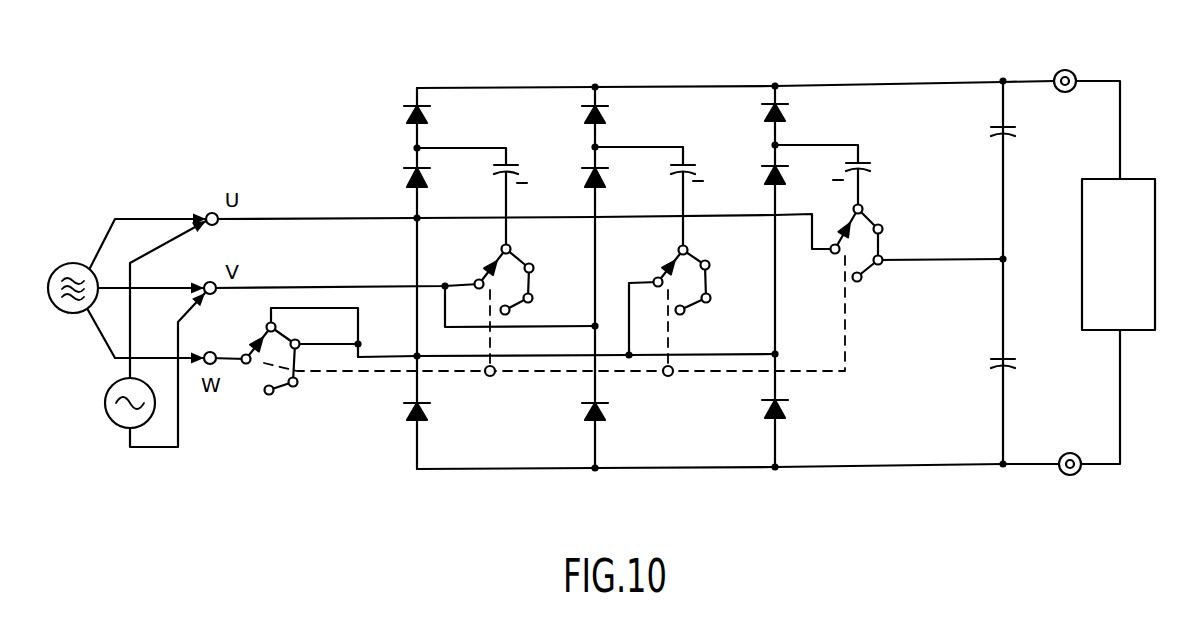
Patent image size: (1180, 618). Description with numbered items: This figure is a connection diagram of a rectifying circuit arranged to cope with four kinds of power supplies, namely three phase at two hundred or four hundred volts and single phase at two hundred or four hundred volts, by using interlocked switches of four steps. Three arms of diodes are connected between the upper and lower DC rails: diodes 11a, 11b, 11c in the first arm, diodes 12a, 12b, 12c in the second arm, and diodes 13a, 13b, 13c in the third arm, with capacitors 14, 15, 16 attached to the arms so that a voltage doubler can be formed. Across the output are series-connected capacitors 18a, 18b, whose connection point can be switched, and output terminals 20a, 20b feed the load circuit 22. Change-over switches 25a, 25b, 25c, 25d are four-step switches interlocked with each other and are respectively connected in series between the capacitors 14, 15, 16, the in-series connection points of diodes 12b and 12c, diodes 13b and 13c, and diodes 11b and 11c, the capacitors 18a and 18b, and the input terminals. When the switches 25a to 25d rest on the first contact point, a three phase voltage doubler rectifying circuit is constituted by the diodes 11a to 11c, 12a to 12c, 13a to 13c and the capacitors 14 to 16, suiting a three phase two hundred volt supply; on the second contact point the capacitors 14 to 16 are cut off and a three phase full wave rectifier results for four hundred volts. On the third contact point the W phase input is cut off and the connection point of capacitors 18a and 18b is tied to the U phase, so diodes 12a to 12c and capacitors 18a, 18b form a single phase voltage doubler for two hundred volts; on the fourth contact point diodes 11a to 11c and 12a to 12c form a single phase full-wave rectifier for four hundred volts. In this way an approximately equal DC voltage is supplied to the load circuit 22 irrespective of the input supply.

The diode 11a is at (408, 120).
The diode 11b is at (408, 185).
The diode 11c is at (408, 412).
The diode 12a is at (603, 115).
The diode 12b is at (589, 175).
The diode 12c is at (593, 416).
The diode 13a is at (785, 115).
The diode 13b is at (768, 177).
The diode 13c is at (789, 407).
The capacitor 14 is at (495, 168).
The capacitor 15 is at (671, 168).
The capacitor 16 is at (869, 165).
The capacitor 18a is at (1012, 131).
The capacitor 18b is at (1012, 362).
The output terminal 20a is at (1074, 71).
The output terminal 20b is at (1081, 472).
The load circuit 22 is at (1131, 189).
The change-over switch 25a is at (520, 306).
The change-over switch 25b is at (660, 291).
The change-over switch 25c is at (849, 243).
The change-over switch 25d is at (293, 395).